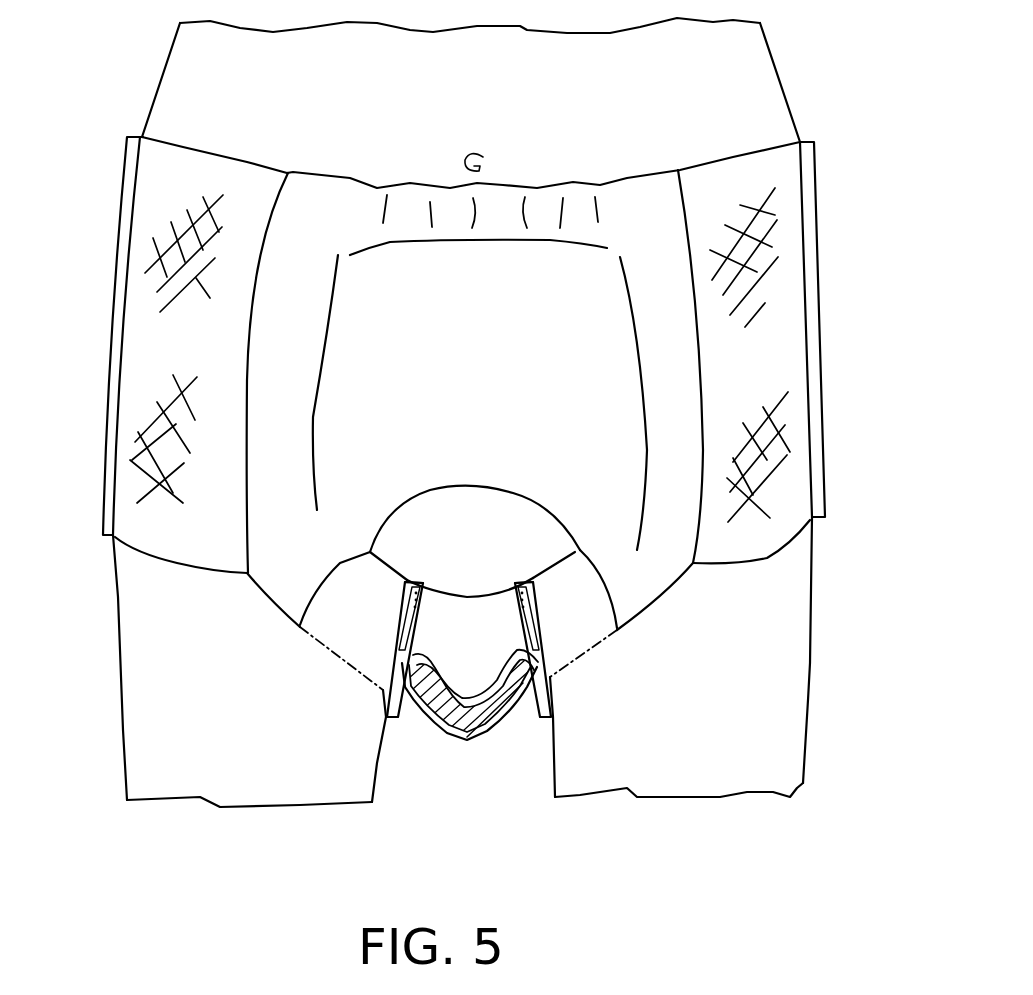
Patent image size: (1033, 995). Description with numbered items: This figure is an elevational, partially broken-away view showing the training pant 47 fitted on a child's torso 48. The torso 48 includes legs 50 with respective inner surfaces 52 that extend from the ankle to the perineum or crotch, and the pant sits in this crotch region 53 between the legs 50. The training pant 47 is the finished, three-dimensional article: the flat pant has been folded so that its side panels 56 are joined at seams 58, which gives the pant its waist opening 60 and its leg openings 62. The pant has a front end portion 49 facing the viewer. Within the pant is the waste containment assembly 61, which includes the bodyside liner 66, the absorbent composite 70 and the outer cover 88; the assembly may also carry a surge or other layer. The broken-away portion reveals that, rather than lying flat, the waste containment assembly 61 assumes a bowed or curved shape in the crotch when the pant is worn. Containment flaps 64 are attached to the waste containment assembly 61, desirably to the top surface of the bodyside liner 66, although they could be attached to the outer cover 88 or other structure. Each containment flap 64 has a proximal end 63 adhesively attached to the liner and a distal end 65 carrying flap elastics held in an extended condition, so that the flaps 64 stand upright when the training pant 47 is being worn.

The training pant 47 is at (75, 217).
The child's torso 48 is at (681, 93).
The front end portion 49 is at (847, 180).
The legs 50 is at (132, 680).
The inner surfaces 52 is at (377, 768).
The crotch region 53 is at (330, 707).
The side panels 56 is at (140, 393).
The seams 58 is at (110, 272).
The waist opening 60 is at (247, 163).
The waste containment assembly 61 is at (528, 150).
The leg openings 62 is at (118, 585).
The proximal end 63 is at (403, 665).
The containment flaps 64 is at (407, 615).
The distal end 65 is at (418, 583).
The bodyside liner 66 is at (470, 610).
The absorbent composite 70 is at (465, 748).
The outer cover 88 is at (497, 730).